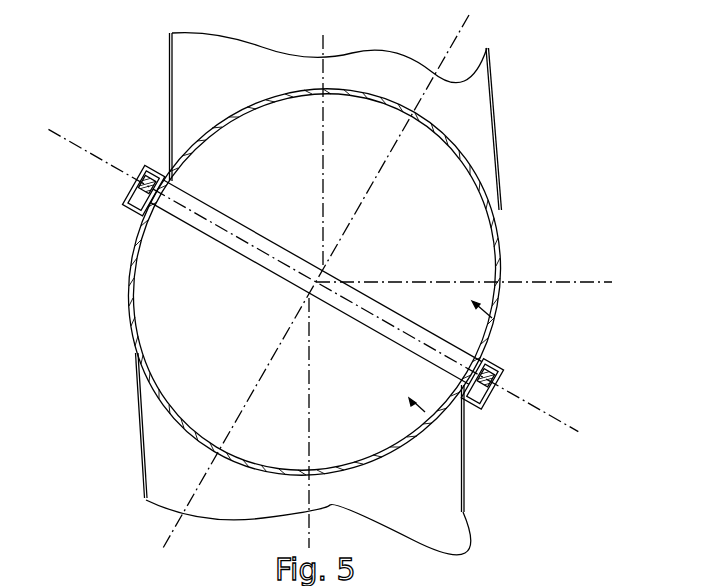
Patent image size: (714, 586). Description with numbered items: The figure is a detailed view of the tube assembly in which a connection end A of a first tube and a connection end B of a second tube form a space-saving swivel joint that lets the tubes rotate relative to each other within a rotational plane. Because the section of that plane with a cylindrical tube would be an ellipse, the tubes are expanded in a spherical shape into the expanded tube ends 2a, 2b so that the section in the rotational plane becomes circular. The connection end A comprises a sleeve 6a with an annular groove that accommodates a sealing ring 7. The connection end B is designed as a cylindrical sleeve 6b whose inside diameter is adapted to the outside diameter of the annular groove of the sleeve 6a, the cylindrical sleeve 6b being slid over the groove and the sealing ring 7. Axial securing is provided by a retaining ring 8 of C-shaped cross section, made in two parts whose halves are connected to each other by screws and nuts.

The expanded tube end 2a is at (502, 295).
The expanded tube end 2b is at (130, 277).
The sleeve 6a is at (174, 182).
The cylindrical sleeve 6b is at (127, 193).
The sealing ring 7 is at (477, 357).
The retaining ring 8 is at (152, 168).
The connection end A is at (480, 310).
The connection end B is at (414, 405).